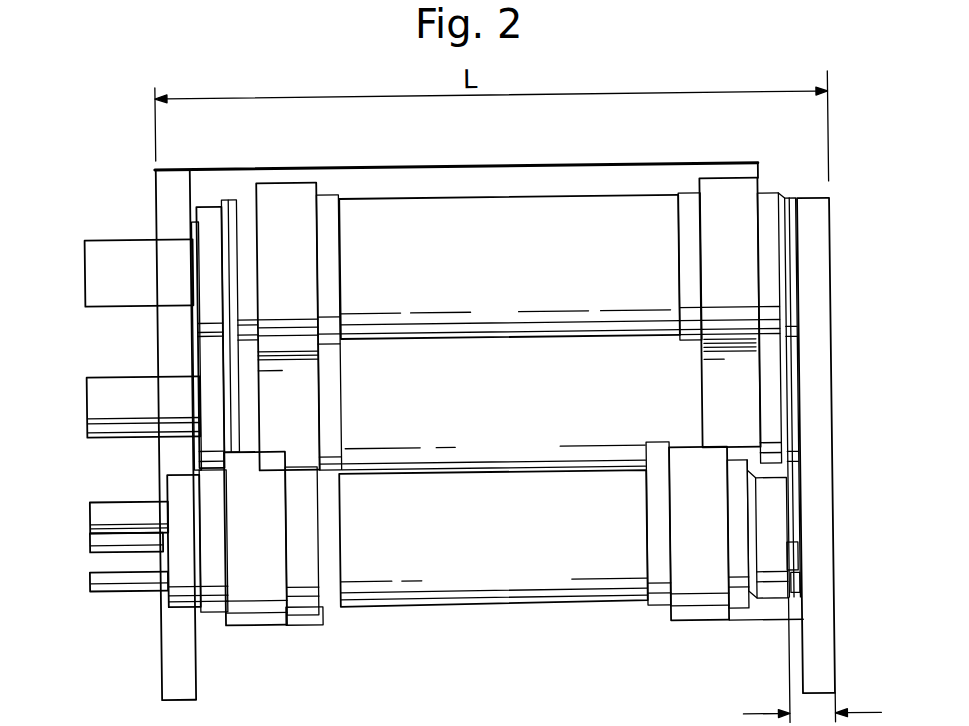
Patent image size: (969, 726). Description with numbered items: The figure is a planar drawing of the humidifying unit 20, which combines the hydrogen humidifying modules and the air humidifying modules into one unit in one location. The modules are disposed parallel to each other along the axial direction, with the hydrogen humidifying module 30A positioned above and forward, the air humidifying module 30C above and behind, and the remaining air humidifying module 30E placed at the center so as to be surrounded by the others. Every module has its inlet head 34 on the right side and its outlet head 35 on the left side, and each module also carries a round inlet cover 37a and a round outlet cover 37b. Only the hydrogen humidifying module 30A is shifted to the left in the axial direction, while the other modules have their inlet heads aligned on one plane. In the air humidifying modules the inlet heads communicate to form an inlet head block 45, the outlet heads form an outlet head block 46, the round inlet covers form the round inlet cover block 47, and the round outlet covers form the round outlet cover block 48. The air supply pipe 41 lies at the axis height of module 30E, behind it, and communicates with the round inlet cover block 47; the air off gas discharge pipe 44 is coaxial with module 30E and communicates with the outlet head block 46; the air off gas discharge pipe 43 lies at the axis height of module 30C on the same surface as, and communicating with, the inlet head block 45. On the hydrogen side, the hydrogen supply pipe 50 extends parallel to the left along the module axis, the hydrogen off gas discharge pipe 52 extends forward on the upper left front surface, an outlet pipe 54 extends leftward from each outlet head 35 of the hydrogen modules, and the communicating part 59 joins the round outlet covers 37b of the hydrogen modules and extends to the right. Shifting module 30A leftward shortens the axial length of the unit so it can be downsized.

The humidifying unit 20 is at (131, 176).
The hydrogen humidifying module 30A is at (483, 607).
The air humidifying module 30C is at (480, 198).
The air humidifying module 30E is at (519, 360).
The inlet head 34 is at (773, 603).
The outlet head 35 is at (180, 604).
The round inlet cover 37a is at (261, 624).
The round outlet cover 37b is at (693, 626).
The air supply pipe 41 is at (84, 258).
The air off gas discharge pipe 43 is at (833, 607).
The air off gas discharge pipe 44 is at (86, 395).
The inlet head block 45 is at (810, 204).
The outlet head block 46 is at (211, 204).
The round inlet cover block 47 is at (289, 188).
The round outlet cover block 48 is at (729, 195).
The hydrogen supply pipe 50 is at (86, 512).
The hydrogen off gas discharge pipe 52 is at (160, 659).
The outlet pipe 54 is at (88, 575).
The communicating part 59 is at (743, 625).